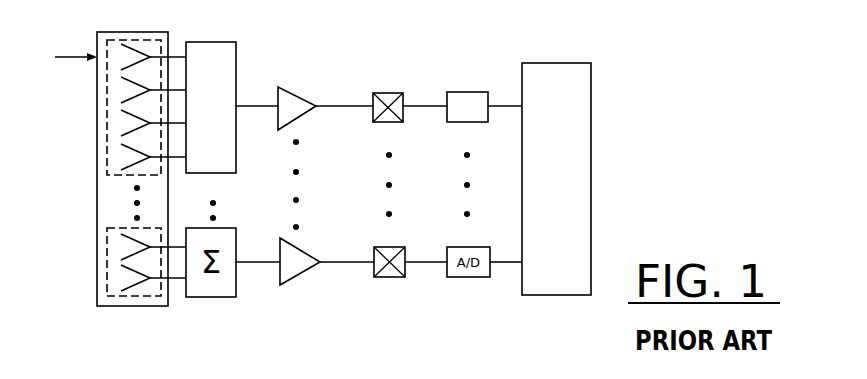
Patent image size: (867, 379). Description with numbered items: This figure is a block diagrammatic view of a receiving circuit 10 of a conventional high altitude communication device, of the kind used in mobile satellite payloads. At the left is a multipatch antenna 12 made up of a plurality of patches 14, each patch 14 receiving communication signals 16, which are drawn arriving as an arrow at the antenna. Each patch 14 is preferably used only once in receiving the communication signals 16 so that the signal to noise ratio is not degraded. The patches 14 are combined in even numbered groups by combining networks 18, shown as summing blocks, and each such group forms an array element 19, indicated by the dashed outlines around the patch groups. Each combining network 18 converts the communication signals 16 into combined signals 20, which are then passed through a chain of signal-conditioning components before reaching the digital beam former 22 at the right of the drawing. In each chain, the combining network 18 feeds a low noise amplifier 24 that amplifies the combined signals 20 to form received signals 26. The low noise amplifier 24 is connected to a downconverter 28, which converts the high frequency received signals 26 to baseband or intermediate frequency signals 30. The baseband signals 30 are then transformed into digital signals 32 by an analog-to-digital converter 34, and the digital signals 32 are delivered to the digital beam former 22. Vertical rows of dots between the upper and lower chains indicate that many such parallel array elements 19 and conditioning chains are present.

The receiving circuit 10 is at (701, 66).
The multipatch antenna 12 is at (157, 32).
The patch 14 is at (130, 47).
The communication signals 16 is at (72, 61).
The combining network 18 is at (240, 46).
The array element 19 is at (107, 162).
The combined signals 20 is at (253, 103).
The digital beam former 22 is at (592, 95).
The low noise amplifier 24 is at (305, 90).
The received signals 26 is at (338, 102).
The downconverter 28 is at (383, 92).
The baseband or intermediate frequency signals 30 is at (417, 100).
The digital signals 32 is at (498, 102).
The analog-to-digital converter 34 is at (468, 92).